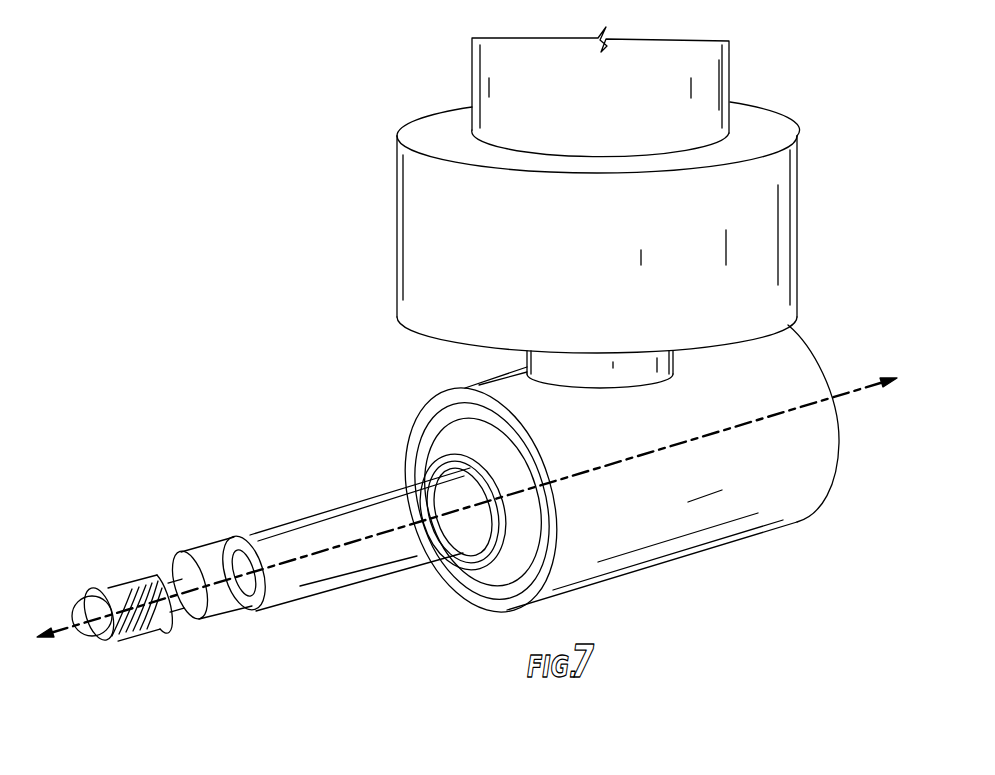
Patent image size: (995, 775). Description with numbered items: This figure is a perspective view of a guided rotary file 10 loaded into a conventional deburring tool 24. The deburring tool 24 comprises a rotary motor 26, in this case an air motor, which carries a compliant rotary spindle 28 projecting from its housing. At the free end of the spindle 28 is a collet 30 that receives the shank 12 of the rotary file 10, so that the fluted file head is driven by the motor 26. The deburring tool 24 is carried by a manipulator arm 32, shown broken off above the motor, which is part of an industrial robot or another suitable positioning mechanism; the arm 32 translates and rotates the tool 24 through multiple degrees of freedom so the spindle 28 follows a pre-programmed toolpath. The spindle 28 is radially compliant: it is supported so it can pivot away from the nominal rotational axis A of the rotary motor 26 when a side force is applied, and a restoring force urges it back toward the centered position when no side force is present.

The rotary file 10 is at (121, 654).
The shank 12 is at (170, 578).
The deburring tool 24 is at (390, 348).
The rotary motor 26 is at (656, 507).
The rotary spindle 28 is at (318, 494).
The collet 30 is at (220, 607).
The manipulator arm 32 is at (408, 209).
The nominal rotational axis A is at (62, 625).